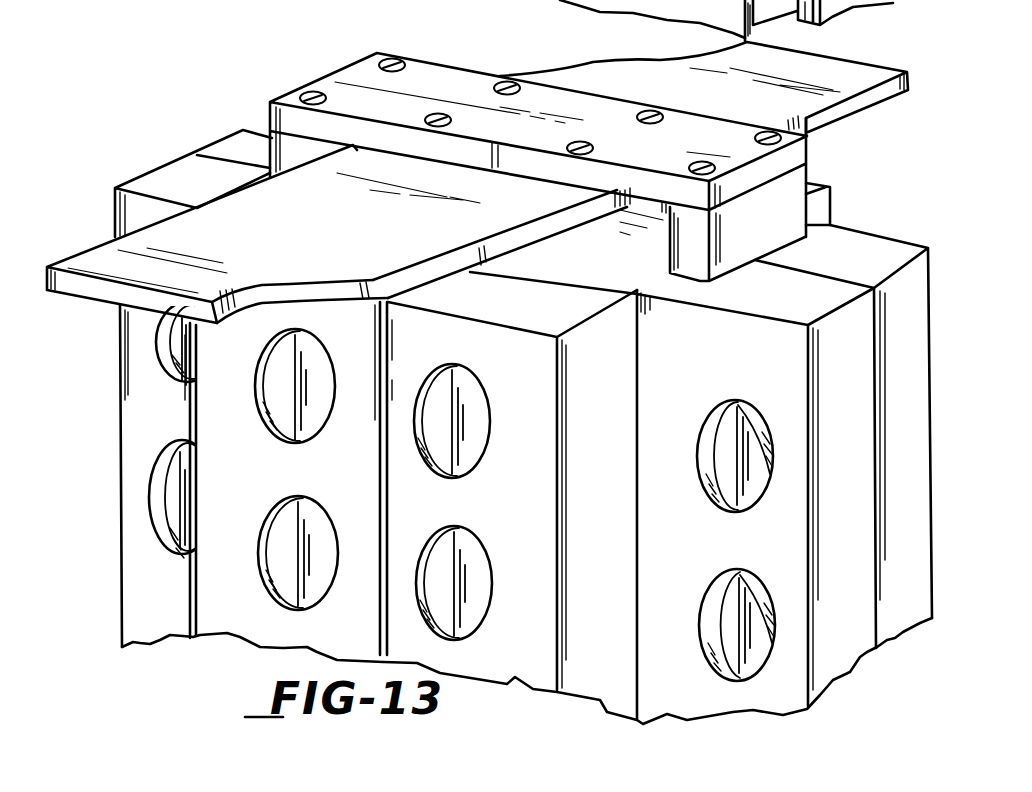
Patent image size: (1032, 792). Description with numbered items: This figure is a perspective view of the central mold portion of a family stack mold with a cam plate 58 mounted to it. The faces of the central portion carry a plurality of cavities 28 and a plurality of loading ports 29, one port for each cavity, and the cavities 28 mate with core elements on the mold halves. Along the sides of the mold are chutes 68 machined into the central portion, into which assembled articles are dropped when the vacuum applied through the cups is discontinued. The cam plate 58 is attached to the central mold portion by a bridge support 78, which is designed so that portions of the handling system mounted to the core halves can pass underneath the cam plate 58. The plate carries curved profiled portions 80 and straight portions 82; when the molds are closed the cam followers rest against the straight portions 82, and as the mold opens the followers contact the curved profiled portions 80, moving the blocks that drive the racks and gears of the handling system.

The cavities 28 is at (283, 402).
The loading ports 29 is at (165, 528).
The cam plate 58 is at (227, 233).
The chutes 68 is at (740, 478).
The bridge support 78 is at (450, 99).
The profiled portions 80 is at (303, 293).
The straight portions 82 is at (532, 213).